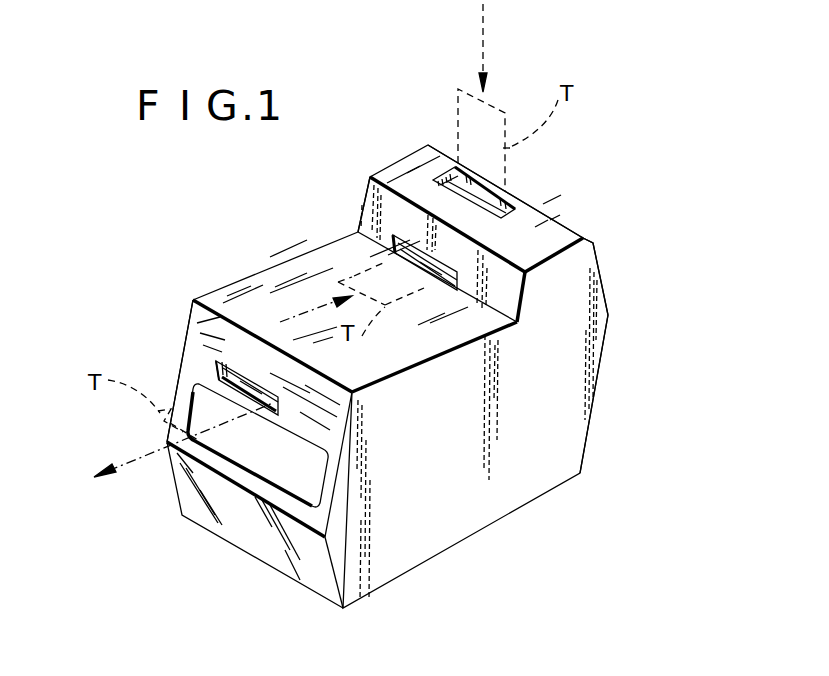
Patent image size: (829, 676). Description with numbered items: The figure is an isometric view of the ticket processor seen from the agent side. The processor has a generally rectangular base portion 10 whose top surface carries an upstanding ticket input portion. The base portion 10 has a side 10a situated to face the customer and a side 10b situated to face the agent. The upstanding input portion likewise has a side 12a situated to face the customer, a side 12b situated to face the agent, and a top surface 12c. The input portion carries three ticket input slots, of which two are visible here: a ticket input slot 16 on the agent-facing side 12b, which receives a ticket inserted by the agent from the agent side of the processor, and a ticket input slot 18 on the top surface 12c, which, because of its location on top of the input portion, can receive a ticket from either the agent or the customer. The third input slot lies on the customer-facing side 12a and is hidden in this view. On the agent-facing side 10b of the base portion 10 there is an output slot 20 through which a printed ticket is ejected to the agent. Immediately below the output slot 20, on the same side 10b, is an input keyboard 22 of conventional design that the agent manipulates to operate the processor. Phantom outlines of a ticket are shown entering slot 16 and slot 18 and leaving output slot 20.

The base portion 10 is at (565, 436).
The side of base portion 10a is at (596, 396).
The side of base portion 10b is at (195, 342).
The side of input portion 12a is at (598, 278).
The side of input portion 12b is at (380, 200).
The top surface of input portion 12c is at (548, 237).
The ticket input slot 16 is at (428, 277).
The ticket input slot 18 is at (488, 190).
The output slot 20 is at (247, 390).
The input keyboard 22 is at (307, 472).